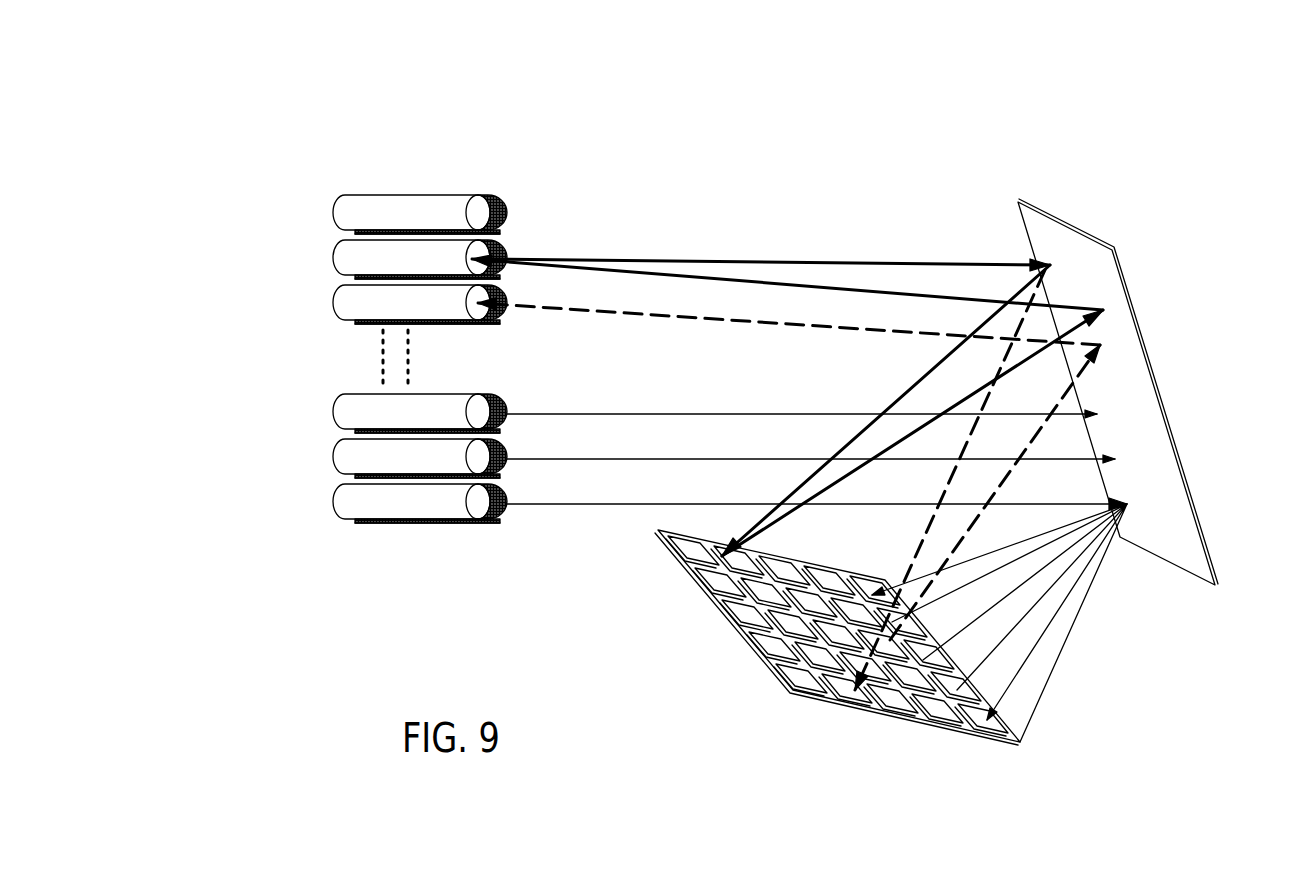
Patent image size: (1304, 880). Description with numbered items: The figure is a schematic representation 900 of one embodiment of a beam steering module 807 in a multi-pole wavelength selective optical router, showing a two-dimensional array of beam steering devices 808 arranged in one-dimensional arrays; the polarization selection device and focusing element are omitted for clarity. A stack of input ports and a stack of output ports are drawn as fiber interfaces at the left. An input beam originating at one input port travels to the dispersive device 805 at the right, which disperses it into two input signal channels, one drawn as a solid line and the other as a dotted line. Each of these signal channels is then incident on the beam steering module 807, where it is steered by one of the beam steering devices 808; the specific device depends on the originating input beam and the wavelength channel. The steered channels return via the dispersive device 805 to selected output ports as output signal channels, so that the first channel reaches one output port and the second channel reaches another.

The schematic representation 900 is at (818, 75).
The dispersive device 805 is at (1152, 363).
The beam steering module 807 is at (842, 700).
The beam steering devices 808 is at (660, 535).